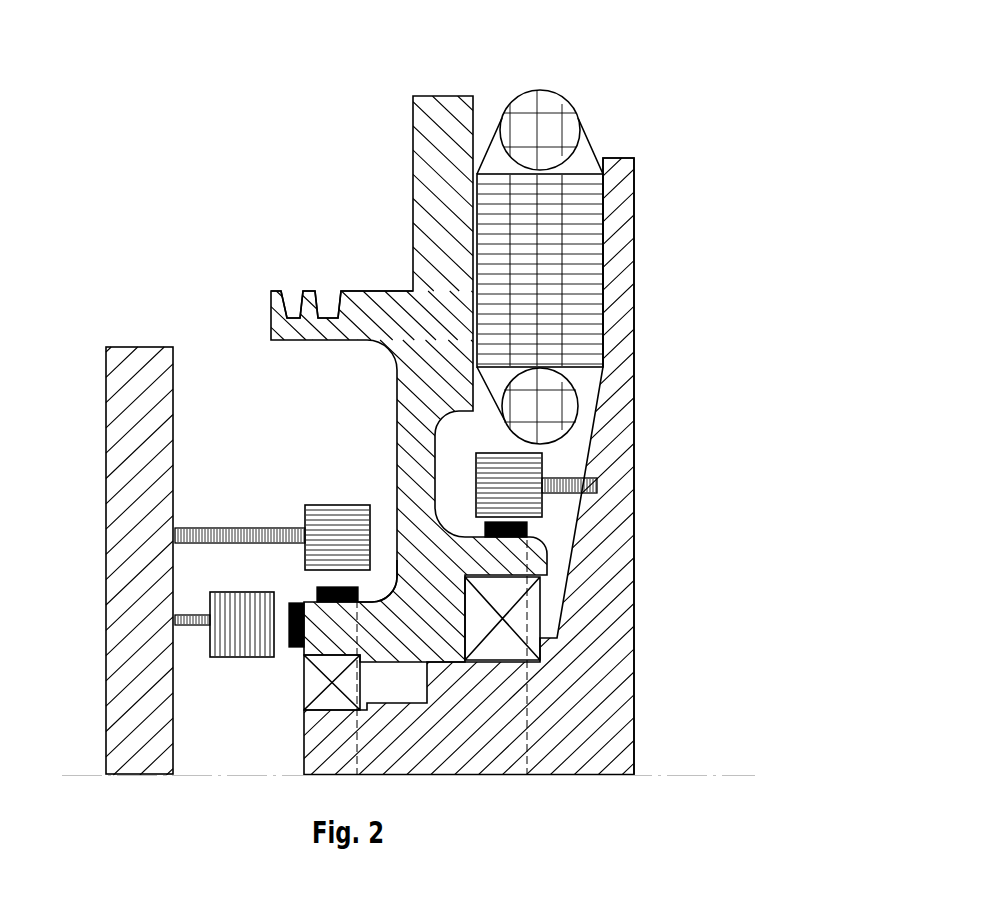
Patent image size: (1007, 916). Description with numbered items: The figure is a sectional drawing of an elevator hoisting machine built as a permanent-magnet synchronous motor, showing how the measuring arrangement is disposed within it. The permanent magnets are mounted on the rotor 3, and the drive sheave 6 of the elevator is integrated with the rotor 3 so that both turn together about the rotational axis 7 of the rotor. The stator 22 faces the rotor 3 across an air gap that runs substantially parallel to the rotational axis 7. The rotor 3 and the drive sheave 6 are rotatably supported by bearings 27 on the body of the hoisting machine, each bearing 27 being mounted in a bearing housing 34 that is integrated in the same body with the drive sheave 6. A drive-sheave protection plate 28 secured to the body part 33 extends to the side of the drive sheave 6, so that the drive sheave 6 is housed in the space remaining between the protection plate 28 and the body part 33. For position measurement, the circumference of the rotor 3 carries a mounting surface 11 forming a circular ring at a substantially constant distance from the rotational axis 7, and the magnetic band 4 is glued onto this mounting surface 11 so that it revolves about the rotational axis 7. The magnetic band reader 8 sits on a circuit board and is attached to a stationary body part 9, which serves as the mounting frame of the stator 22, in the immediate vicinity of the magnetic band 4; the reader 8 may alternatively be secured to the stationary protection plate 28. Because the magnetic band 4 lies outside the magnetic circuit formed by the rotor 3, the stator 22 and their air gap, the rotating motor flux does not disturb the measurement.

The rotor 3 is at (468, 262).
The magnetic band 4 is at (528, 529).
The drive sheave 6 is at (308, 291).
The rotational axis 7 is at (668, 775).
The magnetic band reader 8 is at (329, 505).
The stationary body part 9 is at (635, 300).
The mounting surface 11 is at (378, 590).
The stator 22 is at (575, 120).
The bearing 27 is at (540, 617).
The drive-sheave protection plate 28 is at (130, 347).
The body part 33 is at (680, 143).
The bearing housing 34 is at (342, 627).